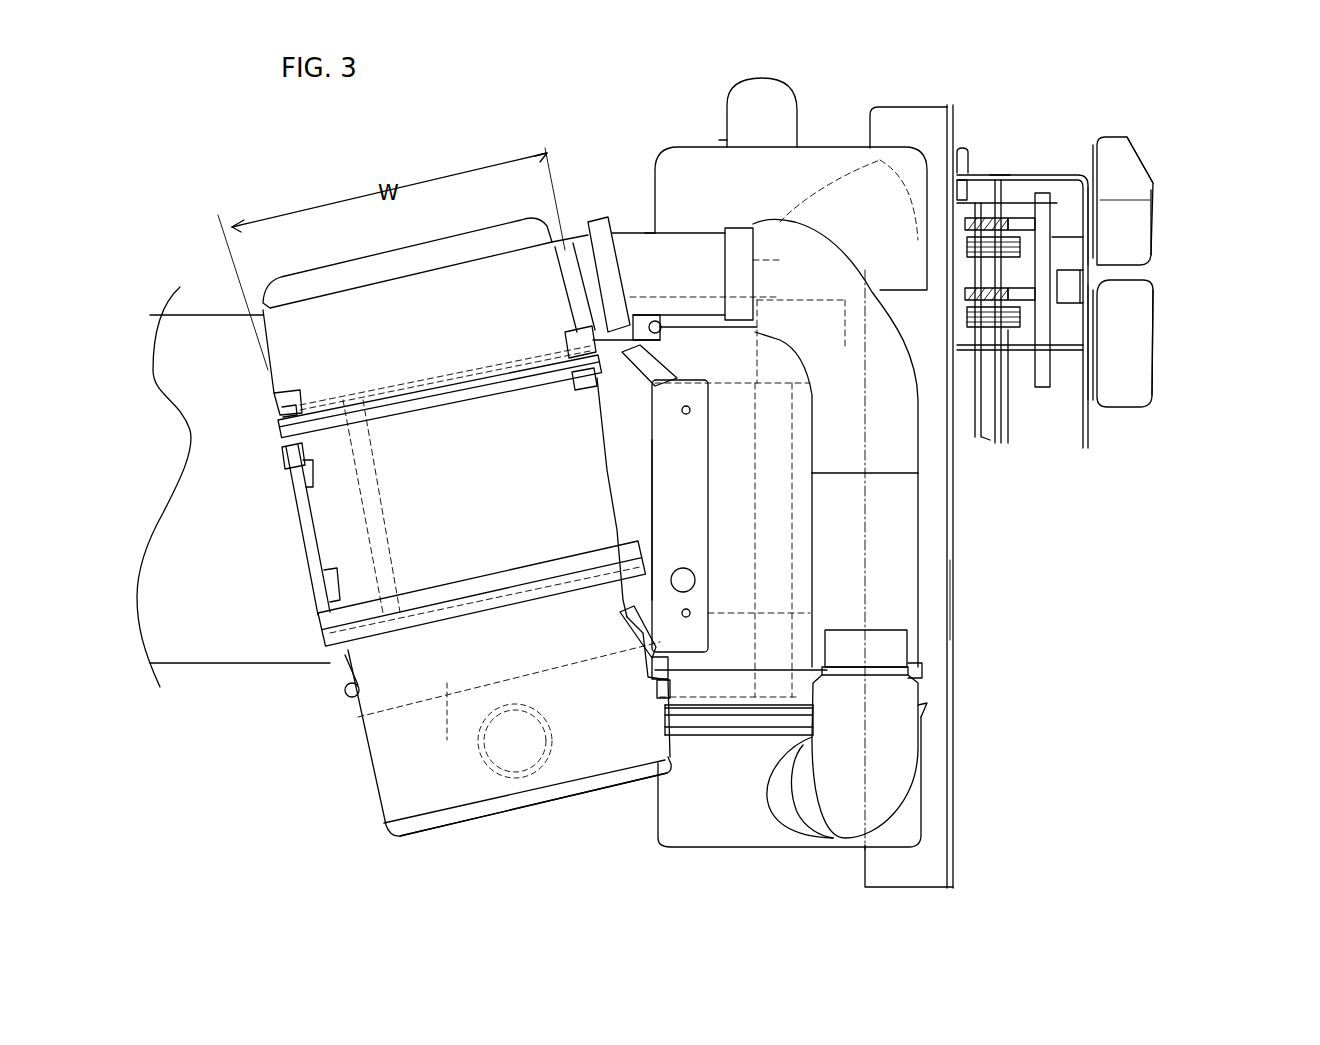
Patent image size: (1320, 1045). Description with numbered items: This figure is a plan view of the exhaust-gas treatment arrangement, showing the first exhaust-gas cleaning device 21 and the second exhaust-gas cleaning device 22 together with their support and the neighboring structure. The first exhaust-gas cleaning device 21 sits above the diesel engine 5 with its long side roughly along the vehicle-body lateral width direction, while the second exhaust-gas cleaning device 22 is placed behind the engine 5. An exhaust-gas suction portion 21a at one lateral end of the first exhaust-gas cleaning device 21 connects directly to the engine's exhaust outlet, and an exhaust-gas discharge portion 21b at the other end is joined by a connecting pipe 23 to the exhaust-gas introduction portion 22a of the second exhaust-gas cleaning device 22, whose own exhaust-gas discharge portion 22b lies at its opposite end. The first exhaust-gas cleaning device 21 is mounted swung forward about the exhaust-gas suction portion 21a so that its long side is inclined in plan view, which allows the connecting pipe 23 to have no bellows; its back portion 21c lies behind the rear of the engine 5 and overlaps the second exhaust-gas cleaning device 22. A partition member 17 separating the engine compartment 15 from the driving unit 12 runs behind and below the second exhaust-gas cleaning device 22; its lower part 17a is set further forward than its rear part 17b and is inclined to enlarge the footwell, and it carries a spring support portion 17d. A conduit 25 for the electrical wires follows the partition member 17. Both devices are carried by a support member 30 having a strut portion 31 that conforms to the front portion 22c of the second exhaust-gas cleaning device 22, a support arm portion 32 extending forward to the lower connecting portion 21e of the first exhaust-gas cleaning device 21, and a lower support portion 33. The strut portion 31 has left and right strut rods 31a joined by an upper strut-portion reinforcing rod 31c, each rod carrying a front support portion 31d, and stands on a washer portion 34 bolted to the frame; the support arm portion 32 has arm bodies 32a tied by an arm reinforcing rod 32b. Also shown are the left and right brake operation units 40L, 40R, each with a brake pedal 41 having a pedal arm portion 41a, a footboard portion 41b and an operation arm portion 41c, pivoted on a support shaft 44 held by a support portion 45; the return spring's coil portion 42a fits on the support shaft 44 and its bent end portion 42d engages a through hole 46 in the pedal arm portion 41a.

The engine 5 is at (220, 665).
The driving unit 12 is at (1268, 165).
The engine compartment 15 is at (190, 158).
The partition member 17 is at (956, 722).
The part positioned in the lower location of the second exhaust-gas cleaning device 17a is at (870, 132).
The part positioned in the back location of the second exhaust-gas cleaning device 17b is at (955, 600).
The spring support portion 17d is at (860, 265).
The first exhaust-gas cleaning device 21 is at (362, 752).
The exhaust-gas suction portion 21a is at (522, 790).
The exhaust-gas discharge portion 21b is at (583, 222).
The back portion 21c is at (678, 752).
The lower connecting portion 21e is at (425, 395).
The second exhaust-gas cleaning device 22 is at (660, 148).
The exhaust-gas introduction portion 22a is at (790, 810).
The exhaust-gas discharge portion 22b is at (727, 125).
The front portion 22c is at (656, 795).
The connecting pipe 23 is at (940, 540).
The conduit 25 is at (832, 192).
The support member 30 is at (720, 540).
The strut portion 31 is at (718, 464).
The strut rods 31a is at (640, 385).
The upper strut-portion reinforcing rod 31c is at (712, 500).
The front support portion 31d is at (628, 310).
The support arm portion 32 is at (308, 555).
The arm bodies 32a is at (375, 390).
The arm reinforcing rod 32b is at (372, 515).
The lower support portion 33 is at (838, 541).
The washer portion 34 is at (680, 302).
The right brake operation unit 40R is at (1170, 177).
The left brake operation unit 40L is at (1197, 405).
The brake pedal 41 is at (1135, 150).
The pedal arm portion 41a is at (1150, 195).
The footboard portion 41b is at (1148, 222).
The operation arm portion 41c is at (997, 175).
The coil portion 42a is at (1060, 280).
The bent end portion 42d is at (1040, 193).
The support shaft 44 is at (962, 148).
The support portion 45 is at (1075, 175).
The through hole 46 is at (1012, 400).